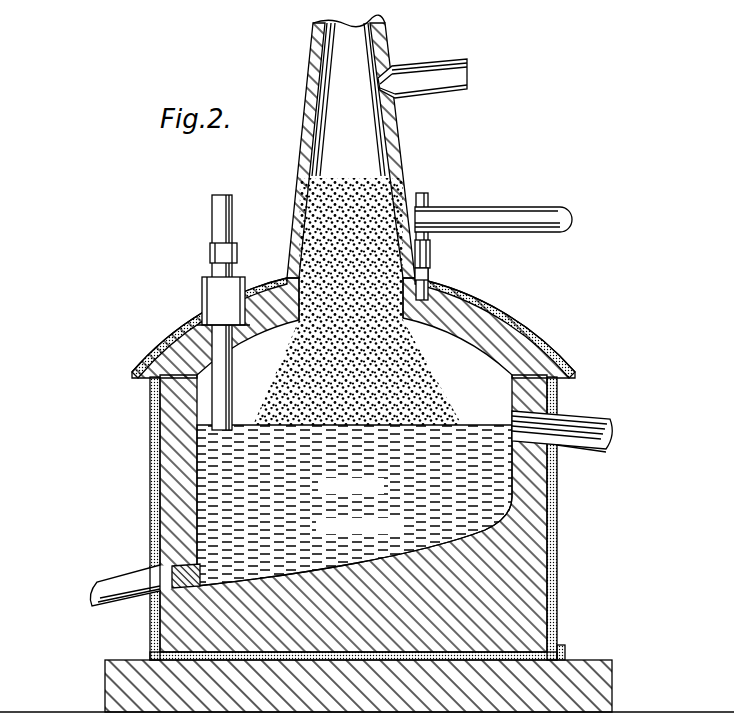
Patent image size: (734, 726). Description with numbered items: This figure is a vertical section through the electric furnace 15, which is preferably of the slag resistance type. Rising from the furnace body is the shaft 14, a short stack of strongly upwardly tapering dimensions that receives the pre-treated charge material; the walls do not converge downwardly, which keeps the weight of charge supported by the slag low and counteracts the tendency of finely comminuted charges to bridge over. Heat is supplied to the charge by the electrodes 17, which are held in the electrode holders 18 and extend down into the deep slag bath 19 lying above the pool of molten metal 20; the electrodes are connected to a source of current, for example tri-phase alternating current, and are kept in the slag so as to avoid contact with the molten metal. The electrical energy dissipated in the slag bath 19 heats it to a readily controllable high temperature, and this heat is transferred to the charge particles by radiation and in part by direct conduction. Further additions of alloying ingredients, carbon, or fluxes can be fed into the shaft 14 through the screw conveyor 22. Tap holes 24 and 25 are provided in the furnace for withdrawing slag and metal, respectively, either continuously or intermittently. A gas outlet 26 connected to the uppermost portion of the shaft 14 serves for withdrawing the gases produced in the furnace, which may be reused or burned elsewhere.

The shaft 14 is at (298, 160).
The electric furnace 15 is at (152, 476).
The electrodes 17 is at (212, 222).
The electrode holders 18 is at (210, 262).
The slag bath 19 is at (195, 447).
The pool of molten metal 20 is at (200, 540).
The screw conveyor 22 is at (548, 216).
The tap hole 24 is at (600, 425).
The tap hole 25 is at (115, 583).
The gas outlet 26 is at (466, 63).